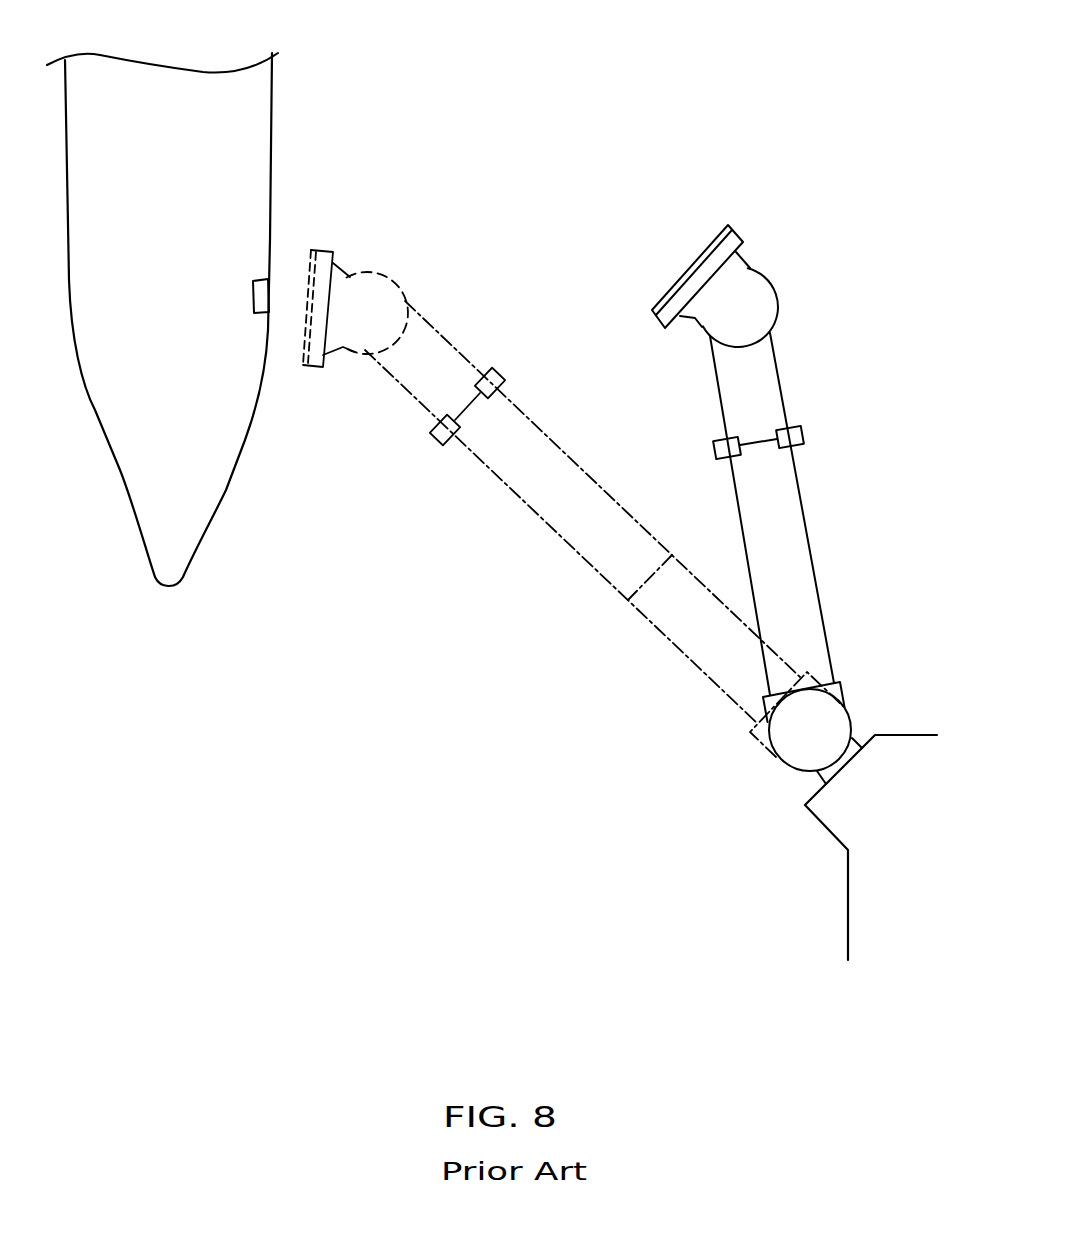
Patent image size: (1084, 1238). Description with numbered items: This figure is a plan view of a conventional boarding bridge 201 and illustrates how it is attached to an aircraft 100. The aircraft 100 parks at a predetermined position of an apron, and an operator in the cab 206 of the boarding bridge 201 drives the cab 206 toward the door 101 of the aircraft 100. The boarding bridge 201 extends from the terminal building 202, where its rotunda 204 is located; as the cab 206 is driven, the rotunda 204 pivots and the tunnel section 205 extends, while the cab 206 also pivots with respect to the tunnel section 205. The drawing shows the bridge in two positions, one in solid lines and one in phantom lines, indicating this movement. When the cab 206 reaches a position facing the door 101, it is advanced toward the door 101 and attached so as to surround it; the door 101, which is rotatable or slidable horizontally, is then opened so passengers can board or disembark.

The aircraft 100 is at (248, 140).
The door 101 is at (253, 295).
The boarding bridge 201 is at (606, 187).
The terminal building 202 is at (913, 735).
The rotunda 204 is at (847, 690).
The tunnel section 205 is at (594, 572).
The cab 206 is at (397, 275).